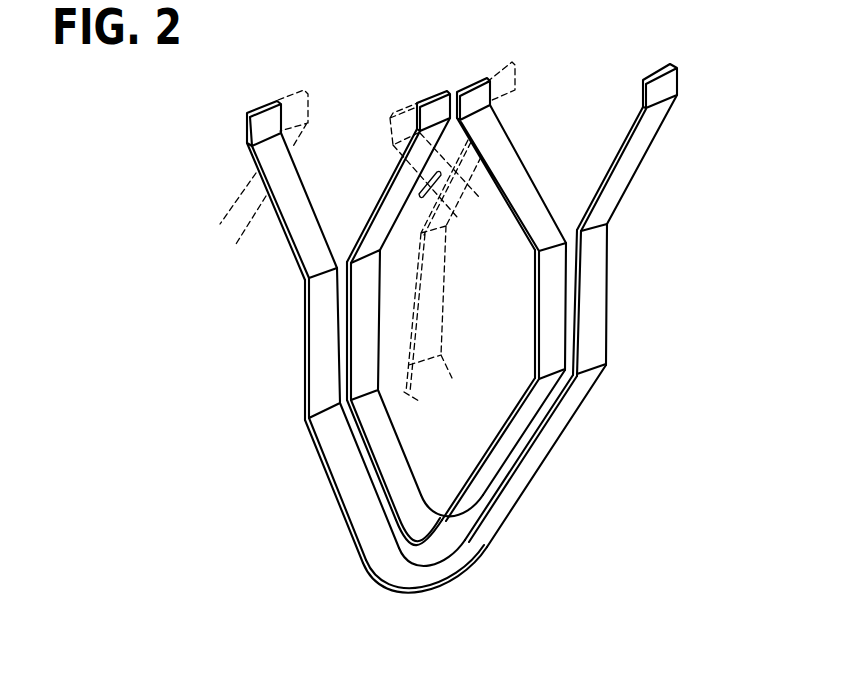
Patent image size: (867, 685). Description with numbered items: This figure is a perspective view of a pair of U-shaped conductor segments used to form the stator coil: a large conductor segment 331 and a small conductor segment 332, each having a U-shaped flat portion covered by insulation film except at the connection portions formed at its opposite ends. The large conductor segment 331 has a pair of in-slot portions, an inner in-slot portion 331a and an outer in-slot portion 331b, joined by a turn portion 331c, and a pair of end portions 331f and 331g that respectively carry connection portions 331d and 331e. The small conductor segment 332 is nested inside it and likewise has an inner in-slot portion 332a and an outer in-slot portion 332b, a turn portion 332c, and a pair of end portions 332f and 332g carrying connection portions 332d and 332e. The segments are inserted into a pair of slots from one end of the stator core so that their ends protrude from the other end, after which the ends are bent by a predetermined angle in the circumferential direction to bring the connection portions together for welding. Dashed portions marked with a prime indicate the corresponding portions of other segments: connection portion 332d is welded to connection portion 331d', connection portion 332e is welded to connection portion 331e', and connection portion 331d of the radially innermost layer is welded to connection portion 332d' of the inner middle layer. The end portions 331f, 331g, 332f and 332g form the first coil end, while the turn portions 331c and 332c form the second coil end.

The large conductor segment 331 is at (463, 366).
The inner in-slot portion 331a is at (323, 310).
The outer in-slot portion 331b is at (590, 285).
The turn portion 331c is at (437, 588).
The connection portion 331d is at (212, 137).
The connection portion 331e is at (713, 96).
The end portion 331f is at (312, 240).
The end portion 331g is at (650, 128).
The connection portion 331d' is at (430, 138).
The connection portion 331e' is at (481, 215).
The small conductor segment 332 is at (476, 323).
The inner in-slot portion 332a is at (360, 353).
The outer in-slot portion 332b is at (553, 335).
The turn portion 332c is at (450, 530).
The connection portion 332d is at (432, 69).
The connection portion 332e is at (468, 76).
The end portion 332f is at (387, 208).
The end portion 332g is at (517, 180).
The connection portion 332d' is at (285, 145).